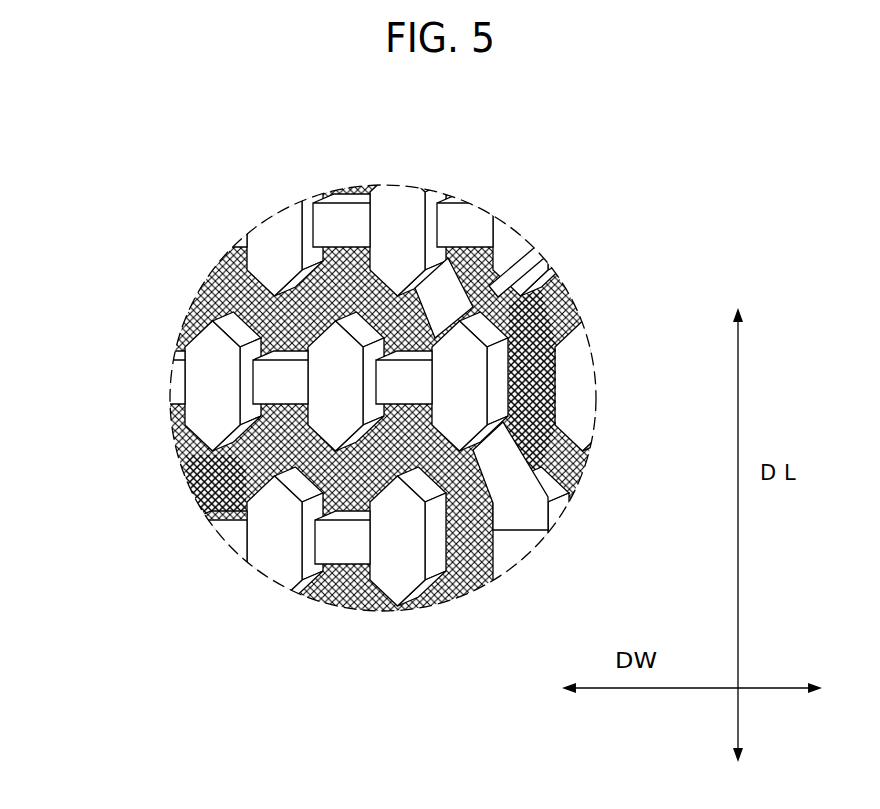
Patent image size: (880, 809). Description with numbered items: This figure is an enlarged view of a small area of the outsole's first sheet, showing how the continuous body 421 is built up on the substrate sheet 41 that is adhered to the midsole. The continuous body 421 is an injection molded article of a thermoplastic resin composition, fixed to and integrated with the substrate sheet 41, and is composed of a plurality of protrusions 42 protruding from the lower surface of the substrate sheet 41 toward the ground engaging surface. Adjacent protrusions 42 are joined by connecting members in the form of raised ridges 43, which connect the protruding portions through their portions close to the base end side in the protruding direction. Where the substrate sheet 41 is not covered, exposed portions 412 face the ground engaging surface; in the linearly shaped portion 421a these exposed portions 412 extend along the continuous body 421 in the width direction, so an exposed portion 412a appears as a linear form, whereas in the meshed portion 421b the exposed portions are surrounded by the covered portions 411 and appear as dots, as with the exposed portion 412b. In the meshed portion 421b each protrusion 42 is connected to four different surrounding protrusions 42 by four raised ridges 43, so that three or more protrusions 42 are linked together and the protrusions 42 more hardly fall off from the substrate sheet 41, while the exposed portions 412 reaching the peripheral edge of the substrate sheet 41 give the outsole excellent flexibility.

The substrate sheet 41 is at (540, 350).
The protrusion 42 is at (397, 232).
The raised ridge 43 is at (473, 228).
The covered portion 411 is at (238, 541).
The exposed portion 412 is at (117, 531).
The exposed portion 412a is at (208, 500).
The exposed portion 412b is at (530, 403).
The continuous body 421 is at (440, 405).
The linearly shaped portion 421a is at (198, 345).
The meshed portion 421b is at (530, 509).